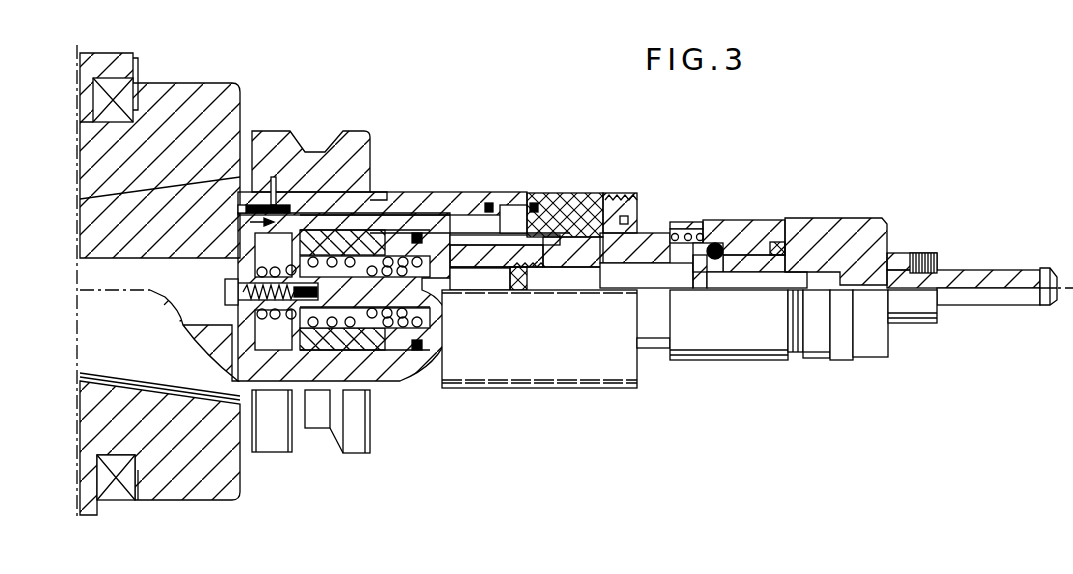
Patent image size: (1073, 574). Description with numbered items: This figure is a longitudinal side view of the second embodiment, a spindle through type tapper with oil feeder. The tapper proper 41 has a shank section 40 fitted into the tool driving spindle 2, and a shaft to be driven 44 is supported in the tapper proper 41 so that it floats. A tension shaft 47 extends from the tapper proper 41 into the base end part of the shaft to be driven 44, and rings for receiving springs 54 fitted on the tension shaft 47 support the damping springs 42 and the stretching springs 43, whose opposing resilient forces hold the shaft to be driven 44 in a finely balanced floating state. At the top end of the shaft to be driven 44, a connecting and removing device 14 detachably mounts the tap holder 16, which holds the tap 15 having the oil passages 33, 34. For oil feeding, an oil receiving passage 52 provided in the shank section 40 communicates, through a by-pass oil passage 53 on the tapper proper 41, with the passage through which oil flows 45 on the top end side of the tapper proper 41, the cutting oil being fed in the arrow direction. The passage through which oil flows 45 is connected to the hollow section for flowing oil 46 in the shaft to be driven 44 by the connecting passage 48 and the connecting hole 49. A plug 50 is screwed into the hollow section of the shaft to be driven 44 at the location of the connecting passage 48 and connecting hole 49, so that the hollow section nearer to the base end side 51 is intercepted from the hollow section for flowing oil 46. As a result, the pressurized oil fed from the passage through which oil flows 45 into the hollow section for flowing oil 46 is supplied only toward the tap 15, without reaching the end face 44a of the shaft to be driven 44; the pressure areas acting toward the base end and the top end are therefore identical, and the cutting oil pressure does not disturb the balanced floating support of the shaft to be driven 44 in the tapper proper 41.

The tool driving spindle 2 is at (222, 95).
The connecting and removing device 14 is at (747, 227).
The tap 15 is at (1003, 275).
The tap holder 16 is at (845, 237).
The oil passage 33 is at (790, 277).
The oil passage 34 is at (1020, 288).
The shank section 40 is at (192, 195).
The tapper proper 41 is at (400, 201).
The damping springs 42 is at (262, 320).
The stretching springs 43 is at (333, 312).
The shaft to be driven 44 is at (653, 280).
The end face 44a is at (372, 198).
The passage through which oil flows 45 is at (507, 218).
The hollow section for flowing oil 46 is at (673, 232).
The tension shaft 47 is at (425, 297).
The connecting passage 48 is at (525, 240).
The connecting hole 49 is at (590, 250).
The plug 50 is at (552, 263).
The hollow section nearer to the base end side 51 is at (292, 207).
The oil receiving passage 52 is at (90, 262).
The by-pass oil passage 53 is at (370, 213).
The rings for receiving springs 54 is at (437, 257).